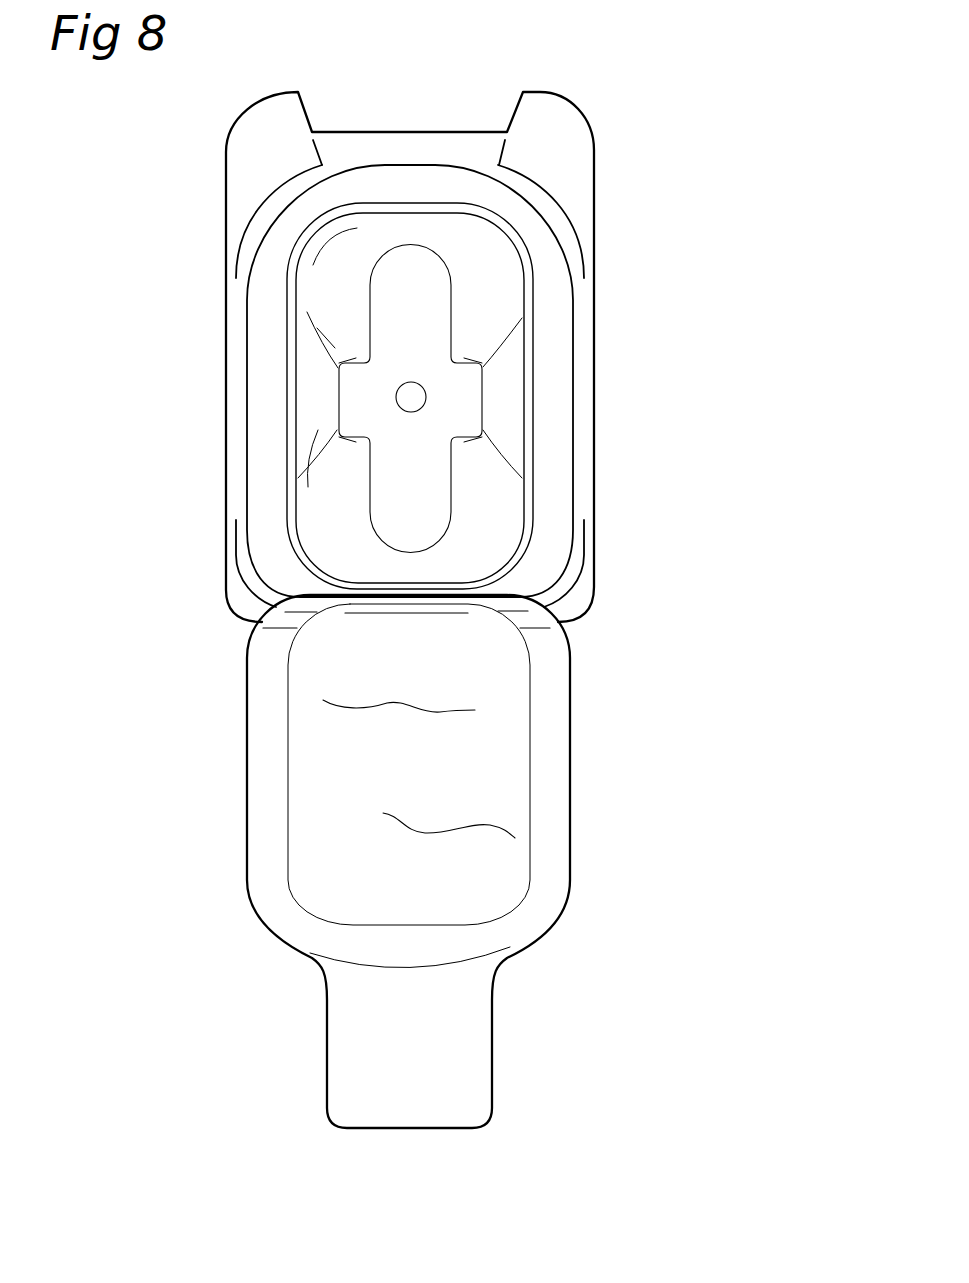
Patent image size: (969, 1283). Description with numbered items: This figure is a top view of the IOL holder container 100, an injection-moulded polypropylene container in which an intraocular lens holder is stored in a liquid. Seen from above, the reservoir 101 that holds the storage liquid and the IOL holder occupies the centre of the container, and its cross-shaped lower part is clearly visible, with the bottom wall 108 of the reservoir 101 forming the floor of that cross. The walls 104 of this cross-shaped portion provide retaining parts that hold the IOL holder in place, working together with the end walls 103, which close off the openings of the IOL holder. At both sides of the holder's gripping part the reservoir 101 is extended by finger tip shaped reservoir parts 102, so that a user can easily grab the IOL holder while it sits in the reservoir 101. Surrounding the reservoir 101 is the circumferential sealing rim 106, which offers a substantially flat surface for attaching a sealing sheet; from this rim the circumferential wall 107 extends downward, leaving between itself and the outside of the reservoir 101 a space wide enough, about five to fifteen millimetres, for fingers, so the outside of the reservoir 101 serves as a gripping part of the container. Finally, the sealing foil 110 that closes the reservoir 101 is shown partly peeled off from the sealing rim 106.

The IOL holder container 100 is at (553, 143).
The reservoir 101 is at (368, 401).
The finger tip shaped reservoir parts 102 is at (345, 274).
The end walls 103 is at (338, 413).
The walls 104 is at (358, 358).
The circumferential sealing rim 106 is at (556, 460).
The circumferential wall 107 is at (593, 196).
The bottom wall 108 is at (410, 287).
The sealing foil 110 is at (452, 1060).